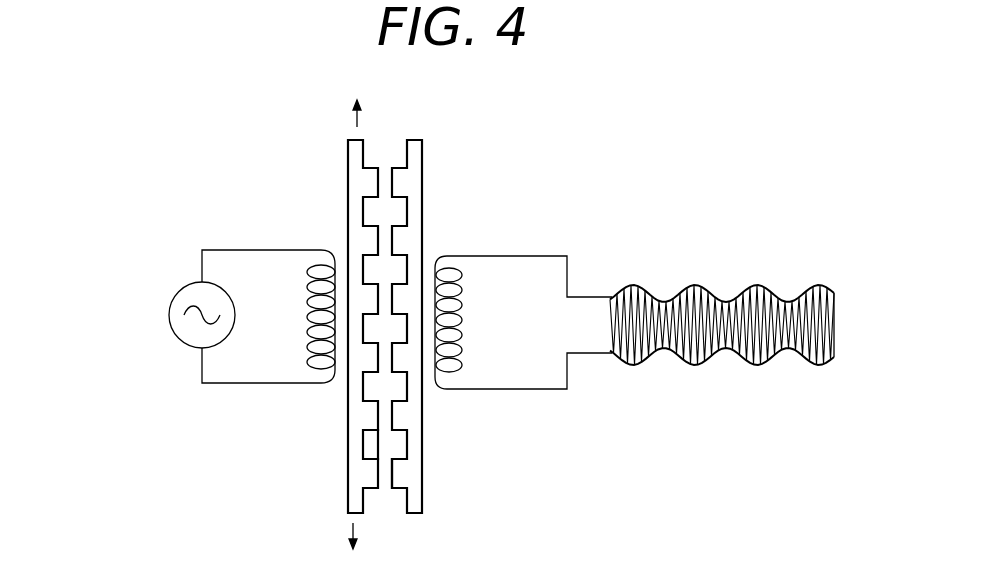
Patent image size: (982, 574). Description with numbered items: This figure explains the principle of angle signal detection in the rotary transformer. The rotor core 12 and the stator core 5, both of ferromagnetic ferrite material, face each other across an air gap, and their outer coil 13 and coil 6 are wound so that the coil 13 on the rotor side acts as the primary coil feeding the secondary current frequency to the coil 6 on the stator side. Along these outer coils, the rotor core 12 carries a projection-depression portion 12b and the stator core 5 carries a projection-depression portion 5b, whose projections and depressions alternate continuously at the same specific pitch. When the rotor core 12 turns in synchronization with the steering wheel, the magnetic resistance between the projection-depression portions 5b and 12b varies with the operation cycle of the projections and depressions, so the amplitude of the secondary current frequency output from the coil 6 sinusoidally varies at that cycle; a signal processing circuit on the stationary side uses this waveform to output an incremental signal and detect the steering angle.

The rotor core 12 is at (348, 152).
The projection-depression portion 12b is at (373, 443).
The stator core 5 is at (423, 162).
The projection-depression portion 5b is at (385, 505).
The coil 13 is at (247, 250).
The coil 6 is at (492, 255).